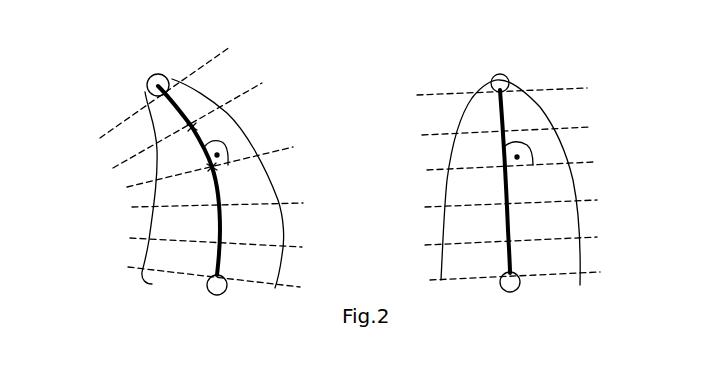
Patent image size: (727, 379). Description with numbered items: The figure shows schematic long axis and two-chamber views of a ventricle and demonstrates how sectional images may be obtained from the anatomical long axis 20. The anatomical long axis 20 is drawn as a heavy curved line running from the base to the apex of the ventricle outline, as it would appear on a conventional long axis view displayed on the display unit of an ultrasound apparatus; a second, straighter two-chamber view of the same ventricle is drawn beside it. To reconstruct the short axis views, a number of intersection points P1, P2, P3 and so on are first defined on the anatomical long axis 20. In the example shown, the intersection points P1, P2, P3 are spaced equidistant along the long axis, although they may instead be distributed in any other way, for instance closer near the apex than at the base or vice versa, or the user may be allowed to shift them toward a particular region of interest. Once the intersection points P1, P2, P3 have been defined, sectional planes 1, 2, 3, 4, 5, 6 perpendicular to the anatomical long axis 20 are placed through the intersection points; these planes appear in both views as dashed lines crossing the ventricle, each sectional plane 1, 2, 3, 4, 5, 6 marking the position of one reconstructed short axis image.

The sectional plane 1 is at (353, 81).
The sectional plane 2 is at (363, 117).
The sectional plane 3 is at (371, 156).
The sectional plane 4 is at (374, 197).
The sectional plane 5 is at (374, 239).
The sectional plane 6 is at (373, 275).
The anatomical long axis 20 is at (222, 257).
The intersection point P1 is at (148, 93).
The intersection point P2 is at (189, 128).
The intersection point P3 is at (208, 168).